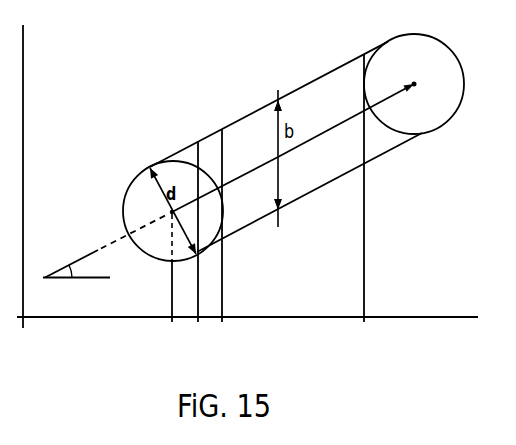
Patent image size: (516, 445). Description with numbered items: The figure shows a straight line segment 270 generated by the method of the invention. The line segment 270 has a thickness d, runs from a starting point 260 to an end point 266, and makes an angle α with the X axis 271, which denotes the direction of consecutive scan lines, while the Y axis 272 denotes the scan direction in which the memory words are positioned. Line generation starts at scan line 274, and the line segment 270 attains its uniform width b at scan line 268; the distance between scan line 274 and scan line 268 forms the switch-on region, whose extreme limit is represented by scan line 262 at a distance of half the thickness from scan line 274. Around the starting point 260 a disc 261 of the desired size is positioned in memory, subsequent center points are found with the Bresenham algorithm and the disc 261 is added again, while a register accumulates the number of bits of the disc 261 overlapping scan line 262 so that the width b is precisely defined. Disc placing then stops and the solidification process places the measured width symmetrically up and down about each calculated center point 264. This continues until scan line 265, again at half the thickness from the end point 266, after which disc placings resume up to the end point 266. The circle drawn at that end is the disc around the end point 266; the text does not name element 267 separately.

The starting point 260 is at (172, 212).
The disc 261 is at (125, 197).
The scan line 262 is at (222, 322).
The center point 264 is at (223, 186).
The scan line 265 is at (362, 323).
The end point 266 is at (414, 85).
The second circle 267 is at (441, 42).
The scan line 268 is at (200, 245).
The line segment 270 is at (316, 139).
The X axis 271 is at (422, 317).
The Y axis 272 is at (24, 95).
The scan line 274 is at (171, 320).